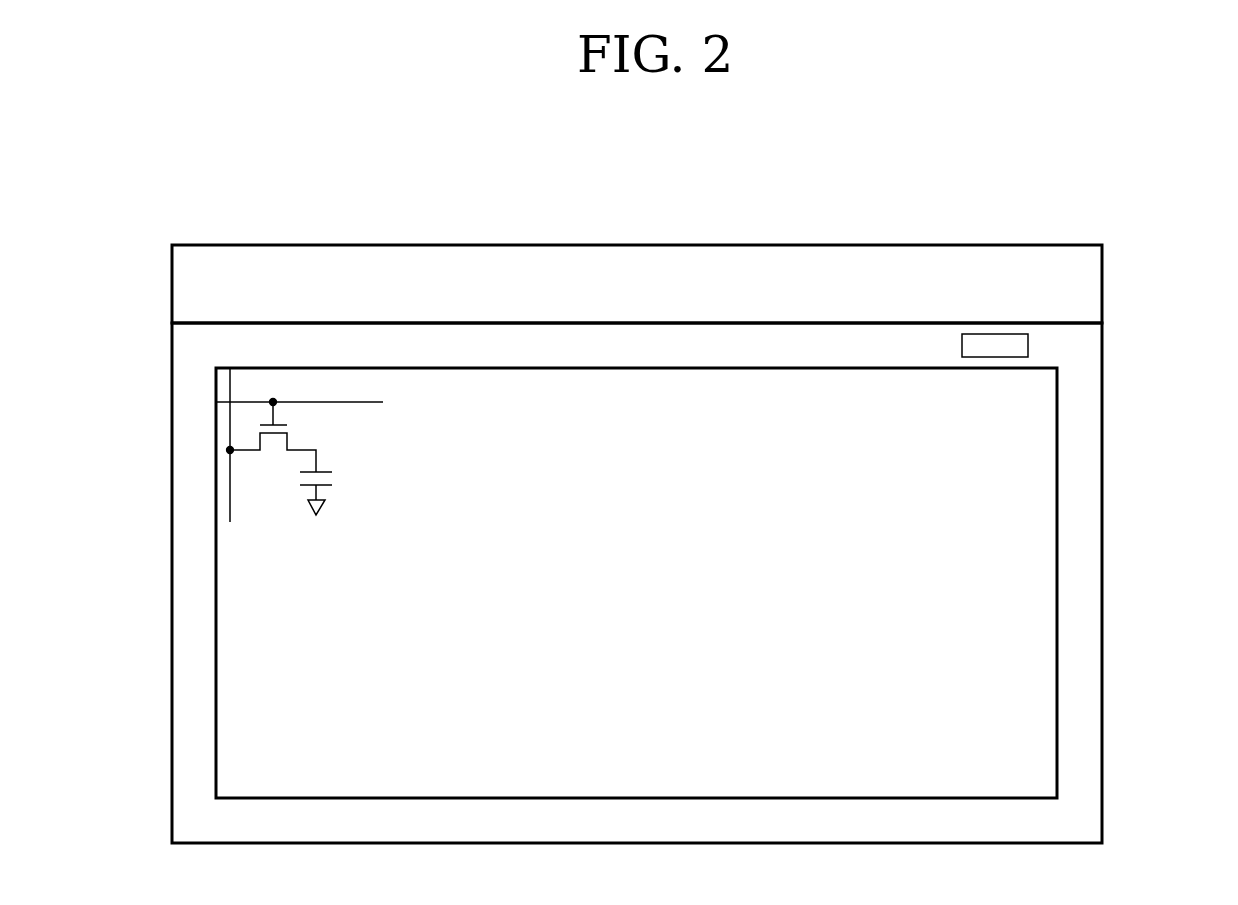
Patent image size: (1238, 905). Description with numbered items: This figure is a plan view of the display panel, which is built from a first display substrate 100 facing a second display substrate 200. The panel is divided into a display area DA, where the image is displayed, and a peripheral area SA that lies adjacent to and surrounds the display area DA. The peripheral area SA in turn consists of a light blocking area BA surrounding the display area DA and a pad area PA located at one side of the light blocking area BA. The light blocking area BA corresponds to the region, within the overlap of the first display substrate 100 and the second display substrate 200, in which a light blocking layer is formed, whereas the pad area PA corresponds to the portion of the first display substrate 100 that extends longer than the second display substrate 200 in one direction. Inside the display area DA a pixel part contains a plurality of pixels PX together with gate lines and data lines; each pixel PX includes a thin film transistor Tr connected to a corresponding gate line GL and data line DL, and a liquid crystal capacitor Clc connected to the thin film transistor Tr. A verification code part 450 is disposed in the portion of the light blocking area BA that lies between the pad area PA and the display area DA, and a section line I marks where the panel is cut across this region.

The first display substrate 100 is at (172, 287).
The second display substrate 200 is at (172, 354).
The verification code part 450 is at (962, 345).
The display area DA is at (1038, 505).
The pad area PA is at (1085, 279).
The light blocking area BA is at (1085, 370).
The peripheral area SA is at (1180, 273).
The data line DL is at (232, 383).
The gate line GL is at (332, 400).
The thin film transistor Tr is at (302, 437).
The liquid crystal capacitor Clc is at (344, 478).
The pixel PX is at (348, 457).
The section line I-I' I is at (995, 405).